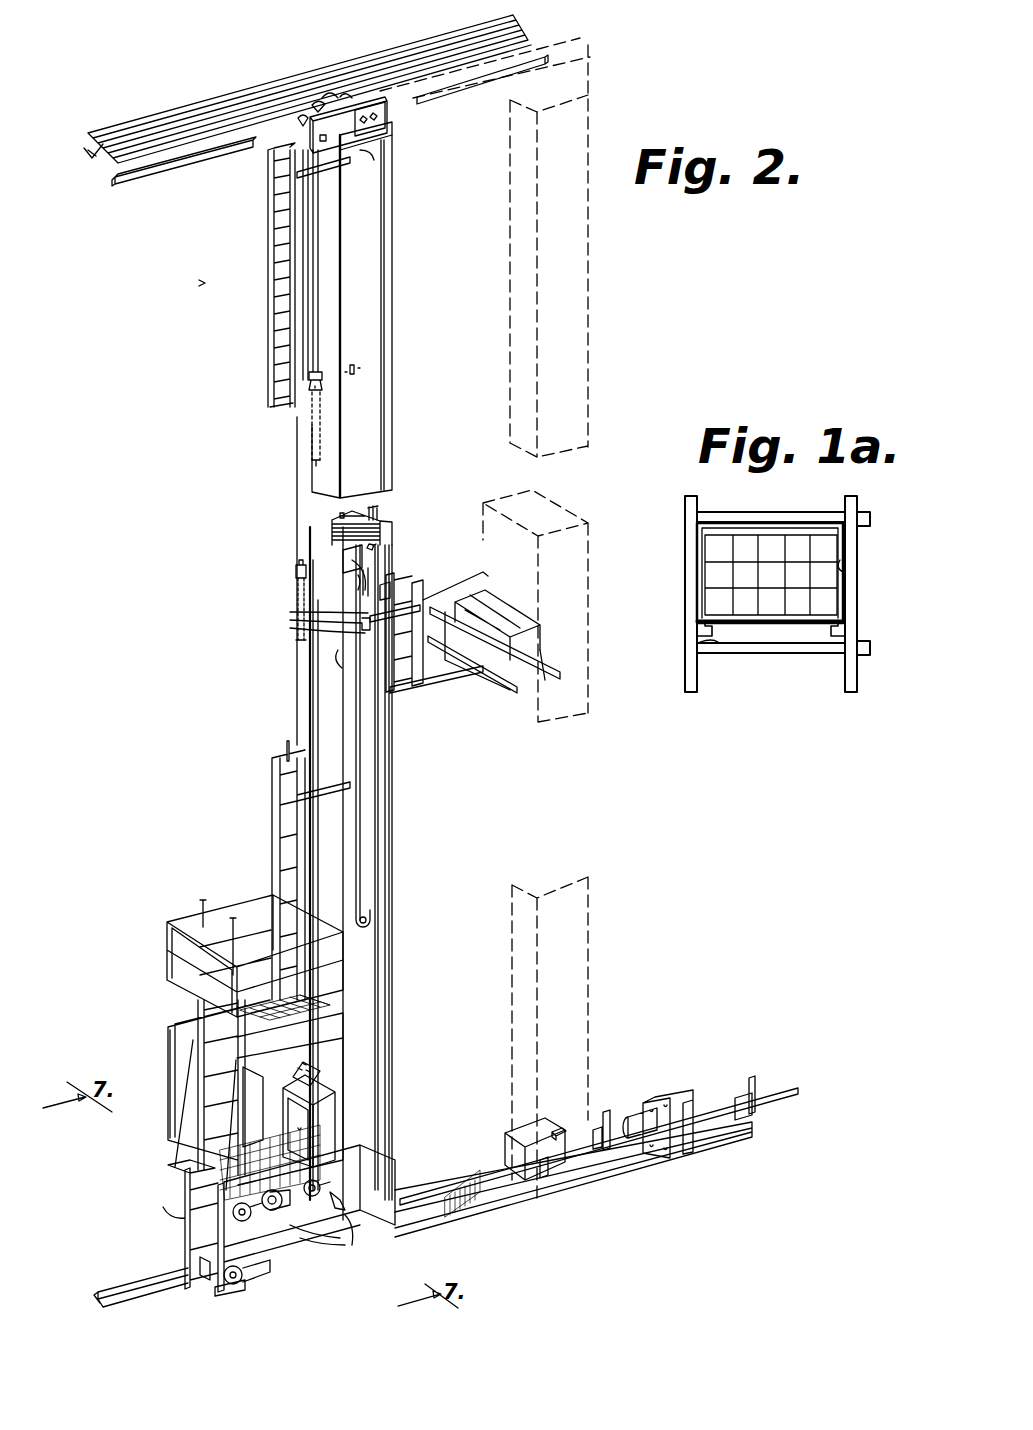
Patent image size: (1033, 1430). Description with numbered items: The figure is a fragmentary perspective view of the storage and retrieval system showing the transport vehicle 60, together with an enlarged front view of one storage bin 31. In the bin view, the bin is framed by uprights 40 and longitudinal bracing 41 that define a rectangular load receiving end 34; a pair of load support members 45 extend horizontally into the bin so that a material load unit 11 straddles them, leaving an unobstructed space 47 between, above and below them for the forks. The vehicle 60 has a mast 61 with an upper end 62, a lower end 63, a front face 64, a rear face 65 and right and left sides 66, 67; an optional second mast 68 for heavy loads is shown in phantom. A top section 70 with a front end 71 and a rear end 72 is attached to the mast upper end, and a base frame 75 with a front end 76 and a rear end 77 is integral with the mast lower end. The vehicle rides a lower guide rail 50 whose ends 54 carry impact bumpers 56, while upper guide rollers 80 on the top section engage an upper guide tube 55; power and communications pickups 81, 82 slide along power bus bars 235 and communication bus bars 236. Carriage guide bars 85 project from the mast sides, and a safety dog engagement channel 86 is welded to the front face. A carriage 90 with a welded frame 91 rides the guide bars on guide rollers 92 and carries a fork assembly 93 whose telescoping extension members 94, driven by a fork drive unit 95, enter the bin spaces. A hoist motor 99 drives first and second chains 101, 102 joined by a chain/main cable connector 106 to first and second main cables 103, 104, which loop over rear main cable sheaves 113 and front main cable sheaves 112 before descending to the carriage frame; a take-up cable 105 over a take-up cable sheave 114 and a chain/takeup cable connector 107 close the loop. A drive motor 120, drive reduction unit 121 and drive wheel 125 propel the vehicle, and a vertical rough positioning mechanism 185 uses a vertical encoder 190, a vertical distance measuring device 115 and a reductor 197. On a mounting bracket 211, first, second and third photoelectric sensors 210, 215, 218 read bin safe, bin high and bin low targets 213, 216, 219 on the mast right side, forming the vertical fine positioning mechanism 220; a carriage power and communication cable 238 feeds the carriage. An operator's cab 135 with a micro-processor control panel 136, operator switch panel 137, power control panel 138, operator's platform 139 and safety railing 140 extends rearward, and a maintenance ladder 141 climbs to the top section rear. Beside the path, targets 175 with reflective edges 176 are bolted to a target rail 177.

In FIG. 1A, the material load unit 11 is at (775, 535).
In FIG. 1A, the storage bin 31 is at (703, 552).
In FIG. 1A, the load receiving end 34 is at (845, 568).
In FIG. 1A, the upright 40 is at (685, 598).
In FIG. 1A, the longitudinal bracing 41 is at (740, 512).
In FIG. 1A, the load support member 45 is at (698, 632).
In FIG. 1A, the unobstructed space 47 is at (700, 642).
In FIG. 2, the lower guide rail 50 is at (148, 1285).
In FIG. 2, the end 54 is at (720, 1143).
In FIG. 2, the upper guide tube 55 is at (156, 185).
In FIG. 2, the impact bumper 56 is at (648, 1098).
In FIG. 2, the vehicle 60 is at (205, 283).
In FIG. 2, the mast 61 is at (310, 694).
In FIG. 2, the upper end 62 is at (378, 210).
In FIG. 2, the lower end 63 is at (382, 1152).
In FIG. 2, the front face 64 is at (392, 528).
In FIG. 2, the rear face 65 is at (318, 720).
In FIG. 2, the right side 66 is at (361, 480).
In FIG. 2, the left side 67 is at (340, 516).
In FIG. 2, the second mast 68 is at (592, 382).
In FIG. 2, the top section 70 is at (365, 98).
In FIG. 2, the front end 71 is at (425, 100).
In FIG. 2, the rear end 72 is at (318, 108).
In FIG. 2, the base frame 75 is at (530, 1130).
In FIG. 2, the front end 76 is at (556, 1132).
In FIG. 2, the rear end 77 is at (183, 1215).
In FIG. 2, the upper guide roller 80 is at (376, 160).
In FIG. 2, the power pickup 81 is at (345, 95).
In FIG. 2, the communications pickup 82 is at (325, 95).
In FIG. 2, the carriage guide bar 85 is at (392, 268).
In FIG. 2, the safety dog engagement channel 86 is at (381, 510).
In FIG. 2, the carriage 90 is at (412, 700).
In FIG. 2, the frame 91 is at (452, 688).
In FIG. 2, the guide roller 92 is at (380, 596).
In FIG. 2, the fork assembly 93 is at (445, 607).
In FIG. 2, the telescoping extension member 94 is at (545, 682).
In FIG. 2, the fork drive unit 95 is at (470, 600).
In FIG. 2, the hoist motor 99 is at (290, 1218).
In FIG. 2, the first chain 101 is at (322, 434).
In FIG. 2, the second chain 102 is at (310, 430).
In FIG. 2, the first main cable 103 is at (318, 312).
In FIG. 2, the second main cable 104 is at (318, 340).
In FIG. 2, the take-up cable 105 is at (296, 478).
In FIG. 2, the chain/main cable connector 106 is at (322, 364).
In FIG. 2, the chain/takeup cable connector 107 is at (296, 578).
In FIG. 2, the front main cable sheave 112 is at (395, 126).
In FIG. 2, the rear main cable sheave 113 is at (300, 118).
In FIG. 2, the take-up cable sheave 114 is at (300, 138).
In FIG. 2, the vertical distance measuring device 115 is at (320, 1195).
In FIG. 2, the vehicle drive motor 120 is at (268, 1268).
In FIG. 2, the drive reduction unit 121 is at (222, 1292).
In FIG. 2, the drive wheel 125 is at (205, 1265).
In FIG. 2, the operator's cab 135 is at (224, 953).
In FIG. 2, the micro-processor control panel 136 is at (335, 1110).
In FIG. 2, the operator switch panel 137 is at (325, 1080).
In FIG. 2, the power control panel 138 is at (165, 962).
In FIG. 2, the operator's platform 139 is at (230, 1095).
In FIG. 2, the safety railing 140 is at (314, 1032).
In FIG. 2, the maintenance ladder 141 is at (272, 810).
In FIG. 2, the target 175 is at (752, 1078).
In FIG. 2, the edge 176 is at (758, 1108).
In FIG. 2, the target rail 177 is at (724, 1106).
In FIG. 2, the vertical rough positioning mechanism 185 is at (342, 1238).
In FIG. 2, the vertical encoder 190 is at (352, 1250).
In FIG. 2, the reductor 197 is at (340, 1205).
In FIG. 2, the first photoelectric sensor 210 is at (290, 620).
In FIG. 2, the mounting bracket 211 is at (385, 631).
In FIG. 2, the bin safe location target 213 is at (336, 558).
In FIG. 2, the second photoelectric sensor 215 is at (290, 612).
In FIG. 2, the bin high target 216 is at (376, 550).
In FIG. 2, the third photoelectric sensor 218 is at (290, 628).
In FIG. 2, the bin low target 219 is at (339, 583).
In FIG. 2, the vertical fine positioning mechanism 220 is at (340, 666).
In FIG. 2, the power bus bar 235 is at (94, 150).
In FIG. 2, the communication bus bar 236 is at (175, 128).
In FIG. 2, the carriage power and communication cable 238 is at (380, 838).